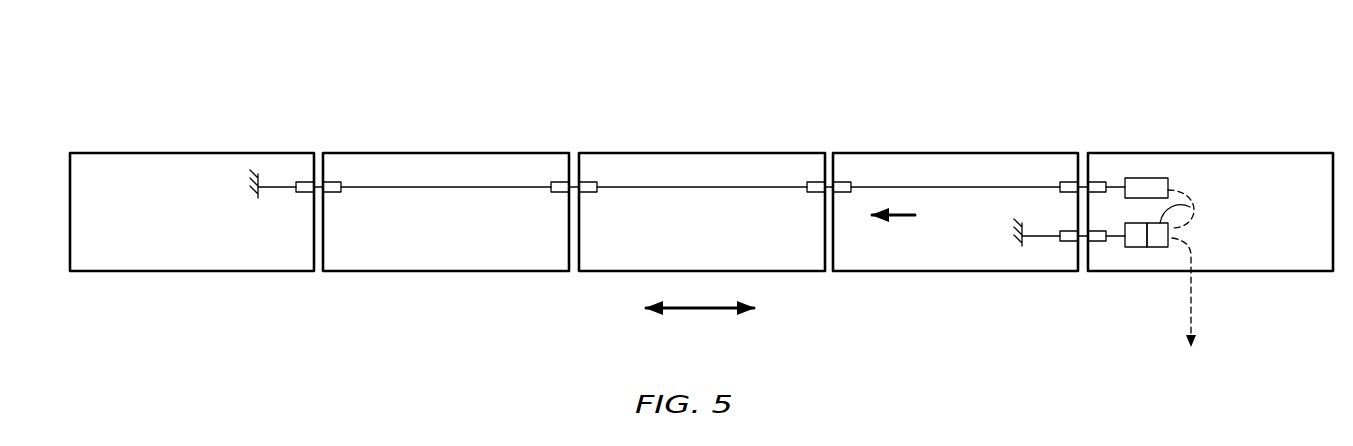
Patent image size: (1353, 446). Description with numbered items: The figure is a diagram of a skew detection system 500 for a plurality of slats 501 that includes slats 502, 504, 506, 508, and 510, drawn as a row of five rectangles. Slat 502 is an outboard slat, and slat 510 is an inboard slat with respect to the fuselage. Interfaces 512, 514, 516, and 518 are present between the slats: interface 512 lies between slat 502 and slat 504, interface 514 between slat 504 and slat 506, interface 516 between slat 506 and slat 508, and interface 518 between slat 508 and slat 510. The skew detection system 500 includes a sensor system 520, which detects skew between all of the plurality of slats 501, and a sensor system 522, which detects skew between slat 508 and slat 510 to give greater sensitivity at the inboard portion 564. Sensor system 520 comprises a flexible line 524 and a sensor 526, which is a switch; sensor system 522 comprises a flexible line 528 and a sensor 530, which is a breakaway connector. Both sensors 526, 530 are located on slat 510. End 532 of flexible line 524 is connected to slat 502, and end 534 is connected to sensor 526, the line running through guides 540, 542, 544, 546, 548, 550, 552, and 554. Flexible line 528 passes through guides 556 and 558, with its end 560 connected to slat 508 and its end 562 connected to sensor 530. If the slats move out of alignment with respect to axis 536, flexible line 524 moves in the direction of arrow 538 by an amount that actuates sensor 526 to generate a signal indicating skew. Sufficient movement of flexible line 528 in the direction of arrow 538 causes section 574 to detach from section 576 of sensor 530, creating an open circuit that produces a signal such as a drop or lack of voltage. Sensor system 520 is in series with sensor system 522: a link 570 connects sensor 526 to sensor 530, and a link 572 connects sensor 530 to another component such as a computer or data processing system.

The skew detection system 500 is at (477, 84).
The plurality of slats 501 is at (120, 141).
The slat 502 is at (193, 152).
The slat 504 is at (445, 152).
The slat 506 is at (700, 152).
The slat 508 is at (955, 152).
The slat 510 is at (1275, 152).
The interface 512 is at (316, 283).
The interface 514 is at (571, 283).
The interface 516 is at (832, 282).
The interface 518 is at (1079, 283).
The sensor system 520 is at (1205, 169).
The sensor system 522 is at (1206, 230).
The flexible line 524 is at (946, 188).
The sensor 526 is at (1157, 178).
The flexible line 528 is at (1040, 238).
The sensor 530 is at (1170, 242).
The end 532 is at (258, 198).
The end 534 is at (1115, 186).
The axis 536 is at (700, 312).
The arrow 538 is at (895, 218).
The guide 540 is at (304, 182).
The guide 542 is at (333, 182).
The guide 544 is at (558, 182).
The guide 546 is at (590, 182).
The guide 548 is at (812, 182).
The guide 550 is at (845, 182).
The guide 552 is at (1066, 182).
The guide 554 is at (1097, 182).
The guide 556 is at (1070, 231).
The guide 558 is at (1093, 241).
The end 560 is at (1017, 246).
The end 562 is at (1113, 237).
The inboard portion 564 is at (1316, 284).
The link 570 is at (1181, 187).
The link 572 is at (1193, 316).
The section 574 is at (1140, 247).
The section 576 is at (1190, 207).